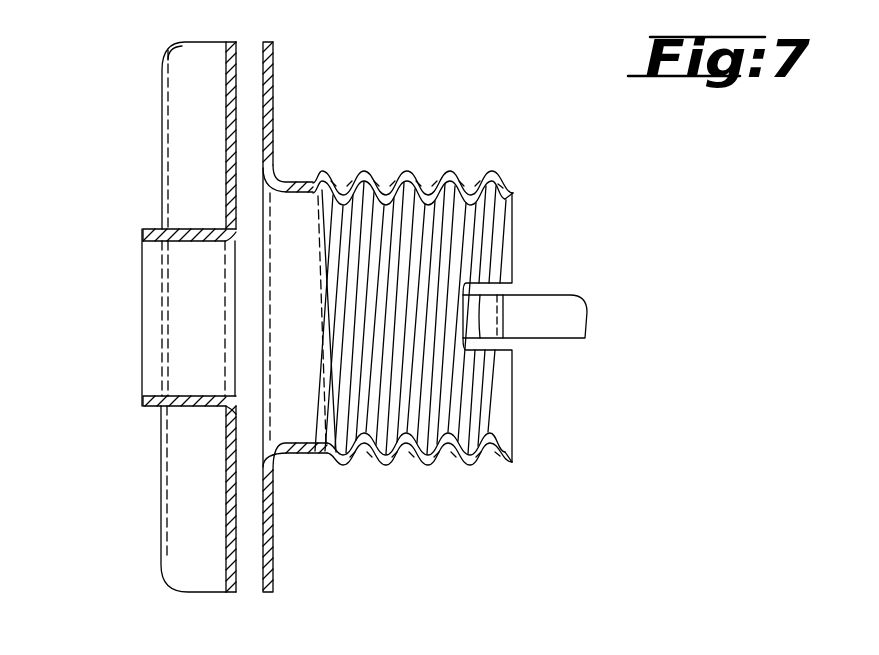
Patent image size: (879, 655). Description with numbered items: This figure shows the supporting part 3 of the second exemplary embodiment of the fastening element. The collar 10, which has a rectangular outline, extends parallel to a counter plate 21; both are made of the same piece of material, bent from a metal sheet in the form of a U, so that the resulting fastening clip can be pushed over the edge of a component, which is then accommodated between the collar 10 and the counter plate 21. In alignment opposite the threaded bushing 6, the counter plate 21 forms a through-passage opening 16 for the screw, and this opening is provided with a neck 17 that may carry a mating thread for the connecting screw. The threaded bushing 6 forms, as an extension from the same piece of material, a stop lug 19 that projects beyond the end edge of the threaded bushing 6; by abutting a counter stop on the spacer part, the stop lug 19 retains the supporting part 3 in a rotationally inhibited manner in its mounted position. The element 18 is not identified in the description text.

The supporting part 3 is at (413, 234).
The threaded bushing 6 is at (450, 170).
The collar 10 is at (268, 85).
The through-passage opening 16 is at (147, 310).
The neck 17 is at (200, 236).
The outer cup wall 18 is at (198, 177).
The stop lug 19 is at (552, 317).
The counter plate 21 is at (232, 122).